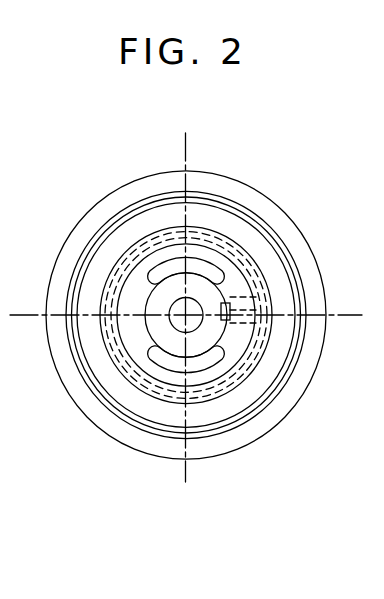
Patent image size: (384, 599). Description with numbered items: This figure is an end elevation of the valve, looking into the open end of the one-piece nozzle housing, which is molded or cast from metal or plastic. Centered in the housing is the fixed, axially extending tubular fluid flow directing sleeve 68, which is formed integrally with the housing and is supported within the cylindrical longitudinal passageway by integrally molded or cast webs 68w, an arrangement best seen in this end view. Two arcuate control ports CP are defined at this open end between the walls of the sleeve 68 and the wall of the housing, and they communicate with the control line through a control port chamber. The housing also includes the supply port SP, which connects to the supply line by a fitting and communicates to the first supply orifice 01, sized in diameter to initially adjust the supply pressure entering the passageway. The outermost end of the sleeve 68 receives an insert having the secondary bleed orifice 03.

The fluid flow directing sleeve 68 is at (210, 280).
The webs 68w is at (130, 283).
The supply port SP is at (262, 303).
The first supply orifice 01 is at (212, 343).
The secondary bleed orifice 03 is at (185, 312).
The control ports CP is at (200, 283).